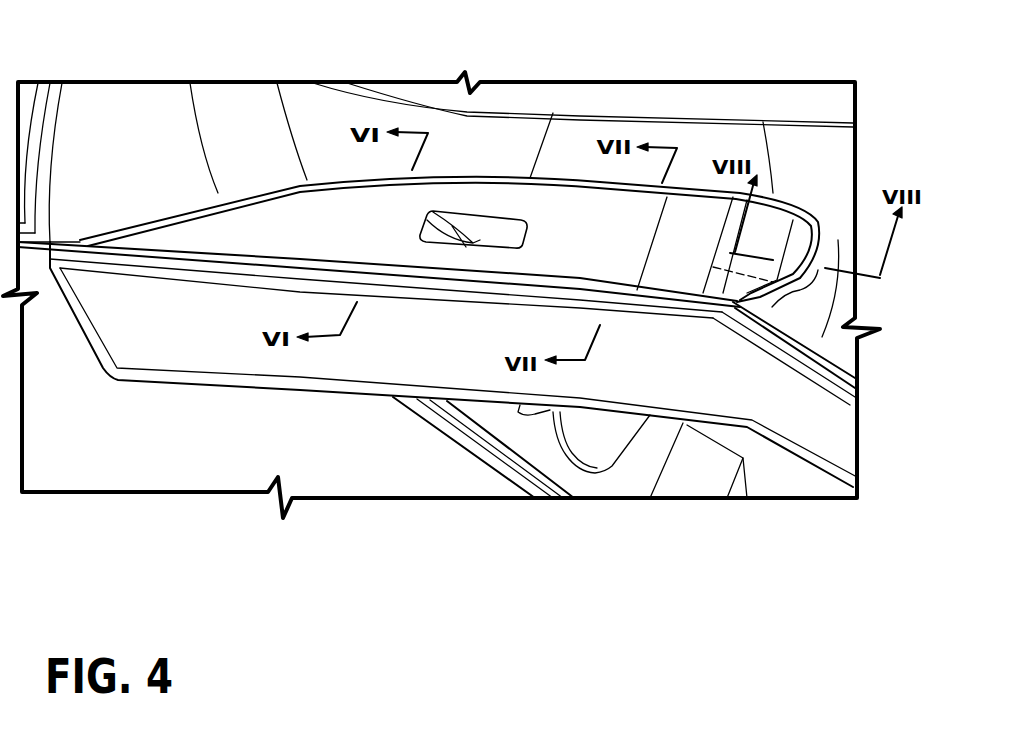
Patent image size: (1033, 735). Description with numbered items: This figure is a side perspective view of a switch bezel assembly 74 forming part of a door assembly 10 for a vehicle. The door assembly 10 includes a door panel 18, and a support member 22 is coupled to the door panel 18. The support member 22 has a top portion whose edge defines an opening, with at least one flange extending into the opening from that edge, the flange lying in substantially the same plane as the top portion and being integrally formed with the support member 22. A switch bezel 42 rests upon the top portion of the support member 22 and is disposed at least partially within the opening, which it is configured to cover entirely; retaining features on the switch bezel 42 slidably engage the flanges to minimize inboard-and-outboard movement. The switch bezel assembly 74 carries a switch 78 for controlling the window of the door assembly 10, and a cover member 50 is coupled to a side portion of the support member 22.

The door assembly 10 is at (131, 142).
The door panel 18 is at (830, 162).
The support member 22 is at (858, 340).
The switch bezel 42 is at (263, 223).
The cover member 50 is at (432, 362).
The switch bezel assembly 74 is at (788, 186).
The switch 78 is at (473, 241).